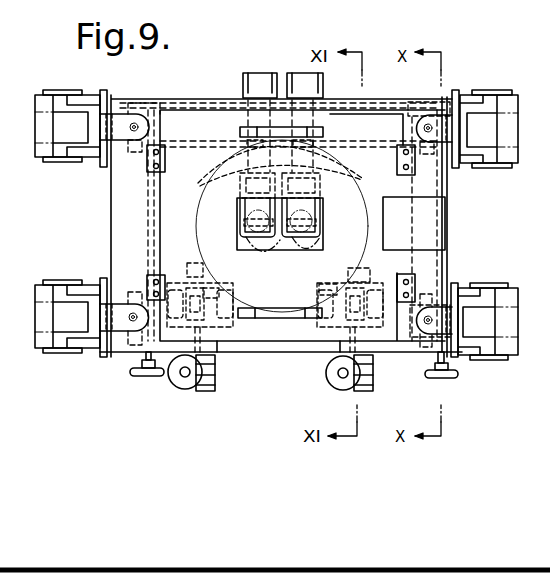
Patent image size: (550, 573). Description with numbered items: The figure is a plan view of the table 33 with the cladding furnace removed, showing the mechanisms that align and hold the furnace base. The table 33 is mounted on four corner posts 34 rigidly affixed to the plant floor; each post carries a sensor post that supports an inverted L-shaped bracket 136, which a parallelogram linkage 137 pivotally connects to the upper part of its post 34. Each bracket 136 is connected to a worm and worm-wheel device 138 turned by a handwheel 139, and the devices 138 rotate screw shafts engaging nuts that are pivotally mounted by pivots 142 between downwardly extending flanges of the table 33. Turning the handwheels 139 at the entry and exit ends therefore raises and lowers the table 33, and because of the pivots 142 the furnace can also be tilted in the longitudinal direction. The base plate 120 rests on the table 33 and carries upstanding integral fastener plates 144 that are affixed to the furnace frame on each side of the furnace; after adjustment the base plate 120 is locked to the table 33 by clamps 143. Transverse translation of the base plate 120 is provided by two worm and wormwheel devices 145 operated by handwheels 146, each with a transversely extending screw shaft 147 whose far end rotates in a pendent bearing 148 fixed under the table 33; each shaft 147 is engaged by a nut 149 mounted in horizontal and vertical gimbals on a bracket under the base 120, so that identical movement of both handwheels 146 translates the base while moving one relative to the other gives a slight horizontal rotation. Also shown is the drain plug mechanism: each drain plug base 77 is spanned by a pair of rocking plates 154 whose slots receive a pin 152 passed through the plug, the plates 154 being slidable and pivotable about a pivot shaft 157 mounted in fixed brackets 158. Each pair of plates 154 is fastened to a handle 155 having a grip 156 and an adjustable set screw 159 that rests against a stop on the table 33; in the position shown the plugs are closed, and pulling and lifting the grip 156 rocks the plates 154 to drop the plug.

The table 33 is at (254, 343).
The corner post 34 is at (62, 128).
The drain plug base 77 is at (240, 243).
The base plate 120 is at (166, 218).
The inverted L-shaped bracket 136 is at (101, 90).
The parallelogram linkage 137 is at (56, 92).
The worm and worm-wheel device 138 is at (146, 101).
The handwheel 139 is at (164, 378).
The pivot 142 is at (136, 153).
The clamp 143 is at (165, 158).
The fastener plate 144 is at (325, 134).
The worm and wormwheel device 145 is at (214, 389).
The handwheel 146 is at (198, 387).
The screw shaft 147 is at (183, 272).
The pendent bearing 148 is at (346, 273).
The nut 149 is at (217, 293).
The pin 152 is at (268, 247).
The rocking plate 154 is at (266, 205).
The handle 155 is at (348, 165).
The grip 156 is at (296, 72).
The pivot shaft 157 is at (326, 200).
The fixed bracket 158 is at (206, 187).
The adjustable set screw 159 is at (236, 144).